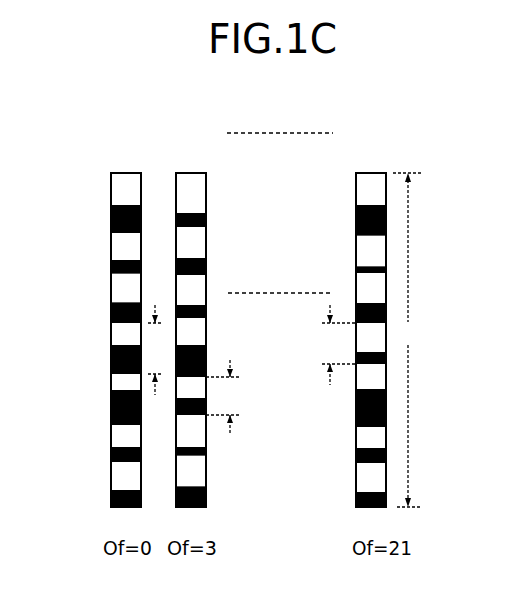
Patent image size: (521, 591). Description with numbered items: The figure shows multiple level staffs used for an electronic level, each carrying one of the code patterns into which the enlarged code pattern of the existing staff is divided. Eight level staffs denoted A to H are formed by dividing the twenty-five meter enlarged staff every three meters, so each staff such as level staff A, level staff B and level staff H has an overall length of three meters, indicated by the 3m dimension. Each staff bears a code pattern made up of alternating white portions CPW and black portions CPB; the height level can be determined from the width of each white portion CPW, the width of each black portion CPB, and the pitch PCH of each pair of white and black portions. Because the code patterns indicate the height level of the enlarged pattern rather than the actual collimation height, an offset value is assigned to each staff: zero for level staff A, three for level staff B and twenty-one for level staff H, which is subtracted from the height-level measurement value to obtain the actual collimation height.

The level staff A is at (122, 167).
The level staff B is at (190, 167).
The level staff H is at (371, 172).
The black portion CPB is at (111, 222).
The white portion CPW is at (111, 290).
The pitch PCH is at (156, 304).
The total pattern length 3m is at (412, 340).